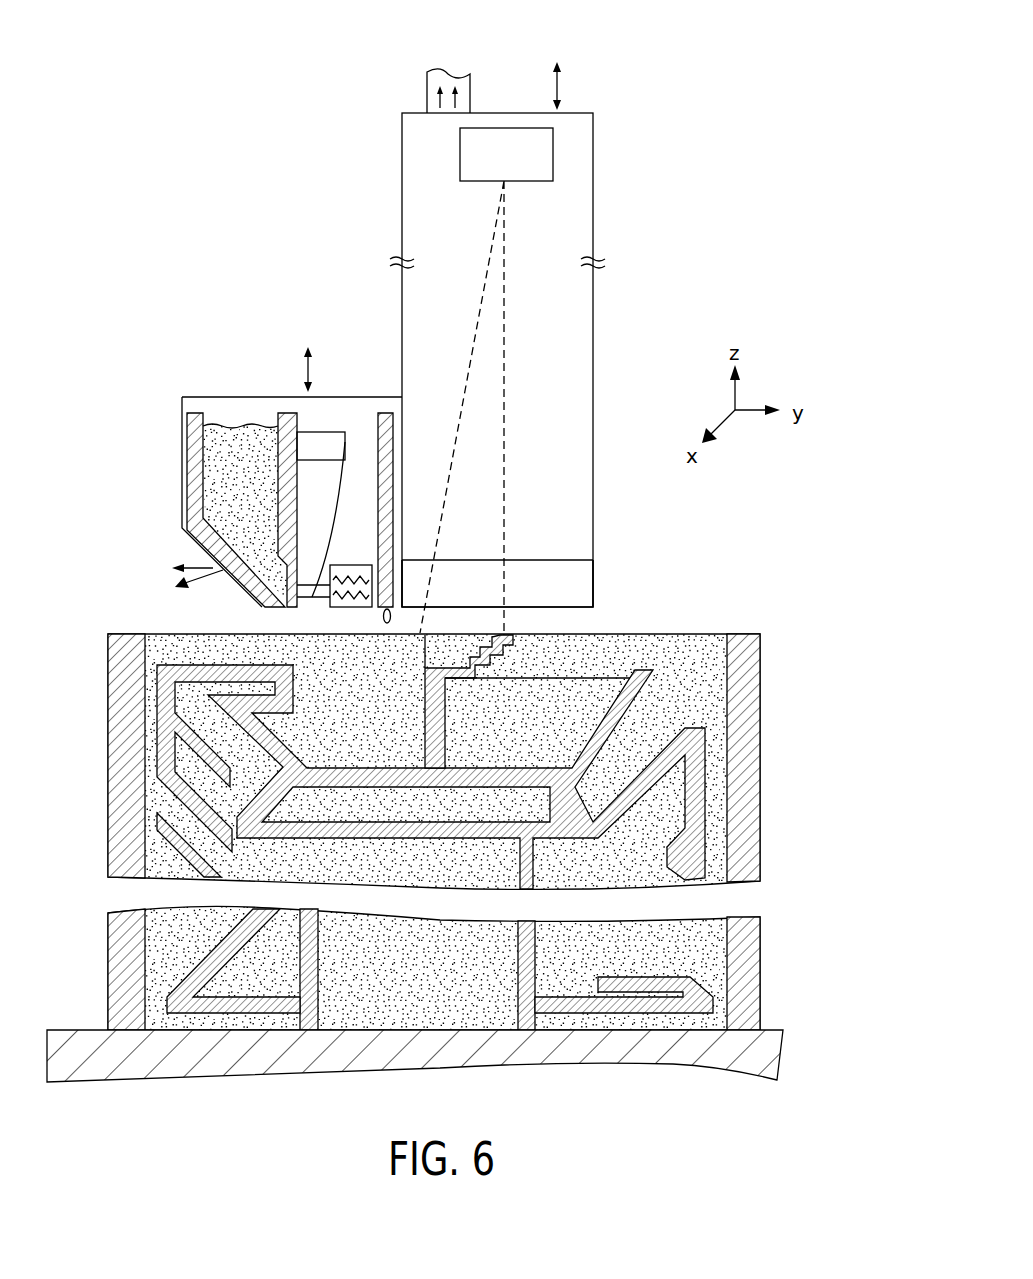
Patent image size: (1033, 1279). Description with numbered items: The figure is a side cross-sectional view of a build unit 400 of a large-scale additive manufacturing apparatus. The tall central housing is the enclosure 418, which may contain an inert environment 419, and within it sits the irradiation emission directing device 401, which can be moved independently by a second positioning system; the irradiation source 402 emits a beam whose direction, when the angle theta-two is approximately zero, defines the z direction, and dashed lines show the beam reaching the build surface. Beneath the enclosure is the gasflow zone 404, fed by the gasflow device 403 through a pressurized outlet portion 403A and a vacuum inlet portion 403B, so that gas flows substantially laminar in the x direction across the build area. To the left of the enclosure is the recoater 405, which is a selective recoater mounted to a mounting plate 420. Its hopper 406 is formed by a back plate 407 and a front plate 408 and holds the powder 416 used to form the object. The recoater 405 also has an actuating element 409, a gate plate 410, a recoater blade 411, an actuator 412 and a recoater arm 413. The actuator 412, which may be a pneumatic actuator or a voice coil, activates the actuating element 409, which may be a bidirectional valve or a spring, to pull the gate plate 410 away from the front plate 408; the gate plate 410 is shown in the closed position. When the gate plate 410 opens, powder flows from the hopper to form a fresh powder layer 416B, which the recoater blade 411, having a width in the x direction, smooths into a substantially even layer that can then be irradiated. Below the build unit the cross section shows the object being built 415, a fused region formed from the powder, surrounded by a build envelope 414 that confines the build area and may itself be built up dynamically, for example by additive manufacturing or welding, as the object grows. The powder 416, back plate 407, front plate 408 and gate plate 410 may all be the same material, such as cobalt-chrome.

The build unit 400 is at (690, 84).
The irradiation emission directing device 401 is at (505, 128).
The irradiation source 402 is at (508, 290).
The gasflow device 403 is at (567, 607).
The pressurized outlet portion 403A is at (591, 560).
The vacuum inlet portion 403B is at (408, 557).
The gasflow zone 404 is at (523, 578).
The recoater 405 is at (400, 303).
The hopper 406 is at (297, 382).
The back plate 407 is at (187, 452).
The front plate 408 is at (297, 430).
The actuating element 409 is at (333, 494).
The gate plate 410 is at (300, 610).
The recoater blade 411 is at (384, 613).
The actuator 412 is at (357, 563).
The recoater arm 413 is at (386, 412).
The build envelope 414 is at (437, 826).
The object being built 415 is at (520, 643).
The powder 416 is at (225, 425).
The fresh powder layer 416B is at (690, 632).
The enclosure 418 is at (402, 173).
The inert environment 419 is at (402, 287).
The mounting plate 420 is at (182, 418).